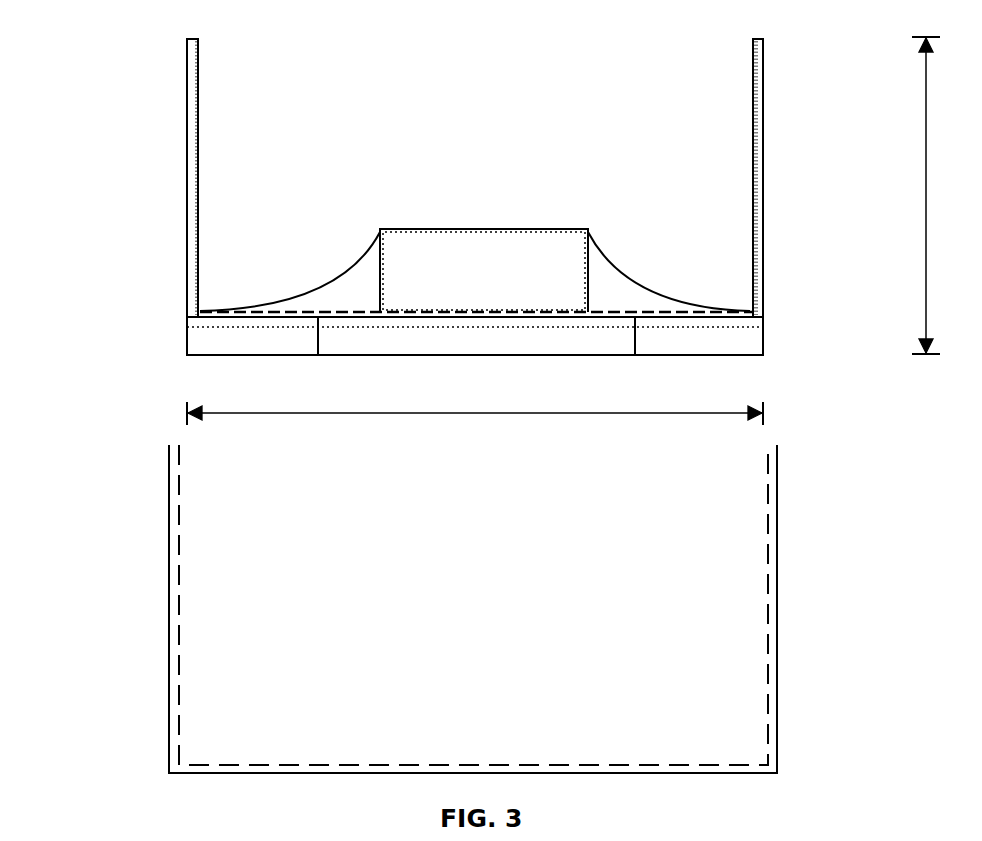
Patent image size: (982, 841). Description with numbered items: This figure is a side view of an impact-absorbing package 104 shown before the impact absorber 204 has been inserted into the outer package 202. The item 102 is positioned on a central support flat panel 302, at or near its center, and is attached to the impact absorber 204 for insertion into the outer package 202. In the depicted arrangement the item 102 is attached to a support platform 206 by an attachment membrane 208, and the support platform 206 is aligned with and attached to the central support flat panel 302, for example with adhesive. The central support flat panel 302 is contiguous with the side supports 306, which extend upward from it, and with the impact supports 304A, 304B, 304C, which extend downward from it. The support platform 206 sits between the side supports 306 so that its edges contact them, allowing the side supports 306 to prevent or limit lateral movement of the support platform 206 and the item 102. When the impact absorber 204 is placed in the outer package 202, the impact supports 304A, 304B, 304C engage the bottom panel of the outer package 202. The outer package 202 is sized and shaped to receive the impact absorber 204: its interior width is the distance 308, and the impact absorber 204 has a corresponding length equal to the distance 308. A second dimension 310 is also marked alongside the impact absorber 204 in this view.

The item 102 is at (588, 268).
The impact-absorbing package 104 is at (134, 130).
The outer package 202 is at (778, 608).
The impact absorber 204 is at (765, 228).
The support platform 206 is at (196, 315).
The attachment membrane 208 is at (362, 255).
The central support flat panel 302 is at (763, 323).
The impact support 304A is at (220, 343).
The impact support 304B is at (458, 345).
The impact support 304C is at (705, 345).
The side support 306 is at (757, 142).
The distance 308 is at (187, 412).
The height dimension 310 is at (922, 356).